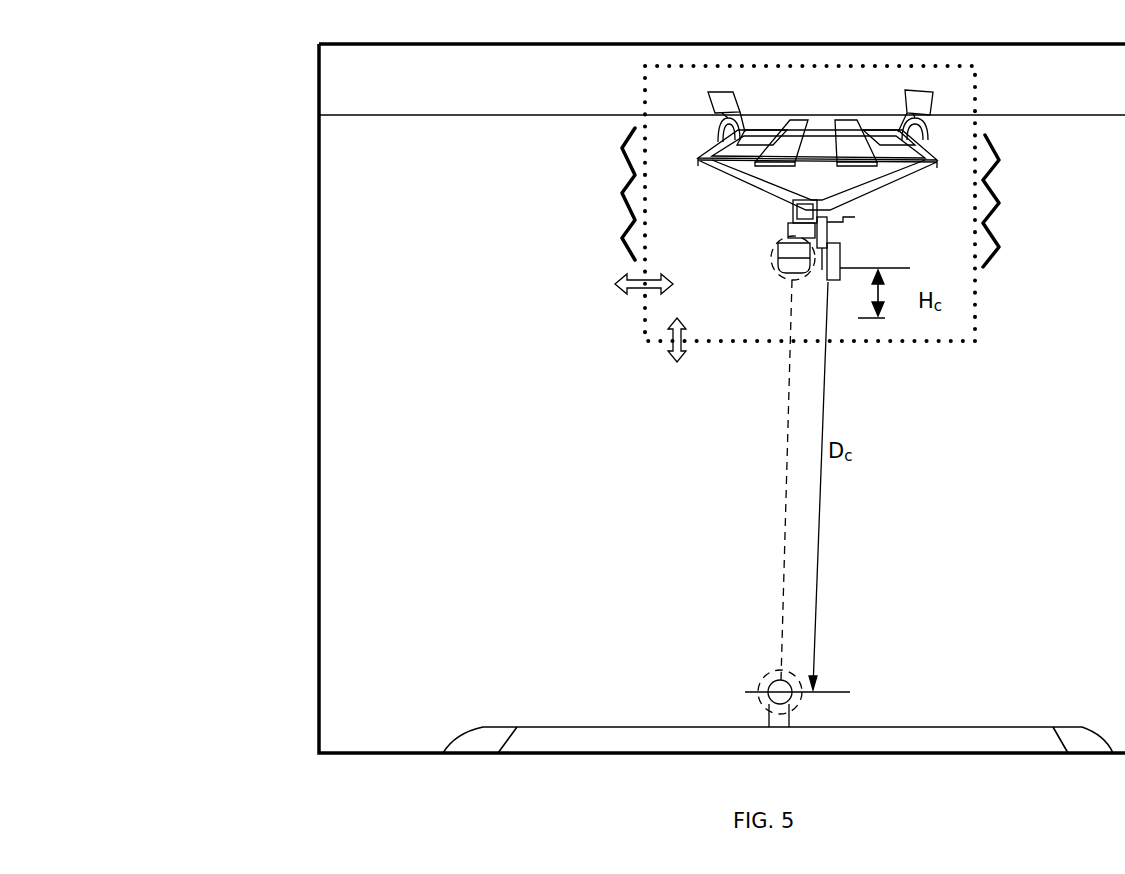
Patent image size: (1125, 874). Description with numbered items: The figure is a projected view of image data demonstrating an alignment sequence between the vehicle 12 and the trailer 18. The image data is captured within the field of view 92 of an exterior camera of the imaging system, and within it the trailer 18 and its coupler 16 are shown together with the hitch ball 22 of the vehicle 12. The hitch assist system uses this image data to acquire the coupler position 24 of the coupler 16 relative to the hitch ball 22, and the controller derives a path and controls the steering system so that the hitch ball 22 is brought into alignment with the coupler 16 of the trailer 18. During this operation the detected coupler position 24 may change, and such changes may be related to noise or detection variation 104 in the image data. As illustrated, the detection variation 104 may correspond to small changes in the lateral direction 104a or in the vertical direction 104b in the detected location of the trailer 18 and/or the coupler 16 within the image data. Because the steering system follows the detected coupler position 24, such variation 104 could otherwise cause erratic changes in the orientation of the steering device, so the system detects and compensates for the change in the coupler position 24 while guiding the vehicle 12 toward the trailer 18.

The field of view 92 is at (319, 75).
The vehicle 12 is at (483, 727).
The detection variation 104 is at (628, 195).
The lateral direction 104a is at (632, 289).
The vertical direction 104b is at (672, 355).
The trailer 18 is at (708, 97).
The coupler 16 is at (790, 270).
The coupler position 24 is at (765, 252).
The hitch ball 22 is at (790, 697).